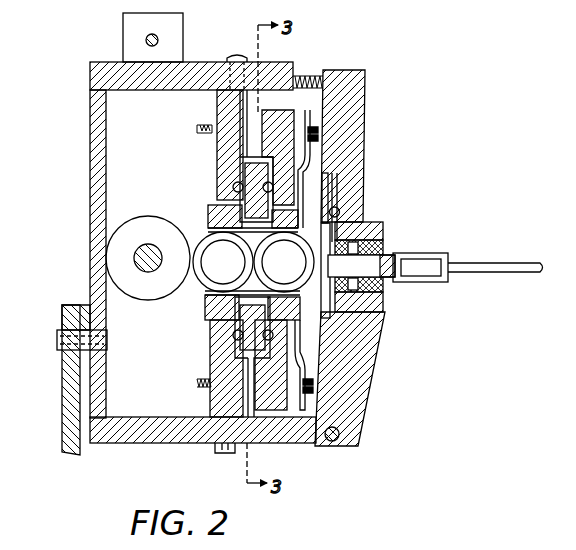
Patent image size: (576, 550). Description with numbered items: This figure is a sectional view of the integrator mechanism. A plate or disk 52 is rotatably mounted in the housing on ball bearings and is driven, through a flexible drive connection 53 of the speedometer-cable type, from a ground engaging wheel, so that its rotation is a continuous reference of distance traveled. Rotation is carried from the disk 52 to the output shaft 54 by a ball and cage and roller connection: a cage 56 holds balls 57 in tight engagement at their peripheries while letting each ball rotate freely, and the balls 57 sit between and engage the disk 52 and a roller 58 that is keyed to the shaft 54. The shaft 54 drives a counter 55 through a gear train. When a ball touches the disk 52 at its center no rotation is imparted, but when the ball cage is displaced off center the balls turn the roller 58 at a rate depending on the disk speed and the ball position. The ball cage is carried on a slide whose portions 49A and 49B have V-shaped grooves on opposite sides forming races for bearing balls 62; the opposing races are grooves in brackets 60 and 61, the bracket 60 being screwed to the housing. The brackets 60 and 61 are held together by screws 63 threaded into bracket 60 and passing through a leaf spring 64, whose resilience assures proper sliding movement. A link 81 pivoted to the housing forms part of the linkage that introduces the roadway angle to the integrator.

The portion of the slide 49A is at (216, 205).
The portion of the slide 49B is at (212, 352).
The disk 52 is at (366, 222).
The flexible drive connection 53 is at (470, 262).
The output shaft 54 is at (148, 244).
The counter 55 is at (135, 42).
The cage 56 is at (338, 205).
The balls 57 is at (218, 307).
The roller 58 is at (135, 292).
The bracket 60 is at (215, 118).
The bracket 61 is at (278, 112).
The bearing balls 62 is at (264, 184).
The screws 63 is at (318, 130).
The leaf spring 64 is at (306, 165).
The link 81 is at (68, 390).